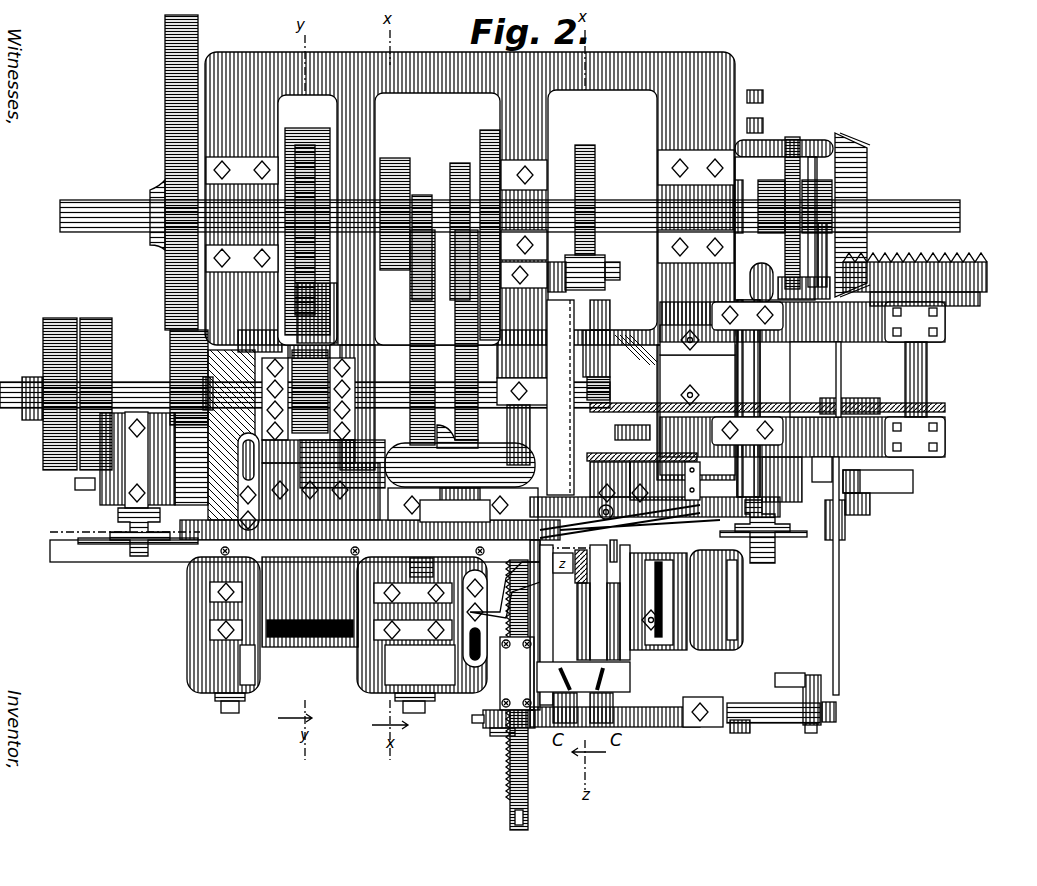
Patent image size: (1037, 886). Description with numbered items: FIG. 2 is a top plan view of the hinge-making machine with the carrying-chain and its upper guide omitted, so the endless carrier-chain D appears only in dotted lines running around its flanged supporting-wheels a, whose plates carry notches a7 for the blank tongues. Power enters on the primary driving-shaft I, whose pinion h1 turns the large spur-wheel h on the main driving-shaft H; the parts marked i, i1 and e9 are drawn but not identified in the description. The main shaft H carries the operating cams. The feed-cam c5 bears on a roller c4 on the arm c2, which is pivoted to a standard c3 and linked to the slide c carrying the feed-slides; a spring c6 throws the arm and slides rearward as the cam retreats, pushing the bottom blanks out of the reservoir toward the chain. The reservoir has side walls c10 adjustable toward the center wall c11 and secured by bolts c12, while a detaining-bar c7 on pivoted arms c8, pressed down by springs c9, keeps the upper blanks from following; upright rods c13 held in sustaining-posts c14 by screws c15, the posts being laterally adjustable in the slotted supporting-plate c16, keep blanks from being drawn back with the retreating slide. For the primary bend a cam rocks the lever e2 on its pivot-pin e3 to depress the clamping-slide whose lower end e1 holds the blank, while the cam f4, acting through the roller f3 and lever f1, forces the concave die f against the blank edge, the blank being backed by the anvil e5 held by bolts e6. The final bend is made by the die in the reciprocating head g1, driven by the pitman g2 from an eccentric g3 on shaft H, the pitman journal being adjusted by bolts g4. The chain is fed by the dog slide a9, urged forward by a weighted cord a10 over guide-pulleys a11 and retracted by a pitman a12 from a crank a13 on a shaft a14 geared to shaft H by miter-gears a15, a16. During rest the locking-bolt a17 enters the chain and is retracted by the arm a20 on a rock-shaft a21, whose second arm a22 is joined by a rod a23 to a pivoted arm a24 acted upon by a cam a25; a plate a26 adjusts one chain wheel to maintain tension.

The large spur-wheel h is at (165, 142).
The main driving-shaft H is at (58, 215).
The eccentric g3 is at (331, 160).
The pitman g2 is at (325, 300).
The bolts g4 is at (310, 428).
The horizontal reciprocating head g1 is at (321, 491).
The cam f4 is at (396, 158).
The anti-friction roller f3 is at (422, 196).
The lever f1 is at (436, 280).
The concave die f is at (460, 231).
The lower end of clamping-slide e1 is at (497, 272).
The lever e2 is at (457, 339).
The journal or pivot-pin e3 is at (417, 464).
The anvil e5 is at (187, 585).
The bolts e6 is at (390, 636).
The block e9 is at (455, 511).
The slide c is at (615, 700).
The arm c2 is at (548, 273).
The standard c3 is at (557, 457).
The roller c4 is at (608, 258).
The feed-cam c5 is at (596, 160).
The spring c6 is at (600, 315).
The detaining-bar c7 is at (632, 592).
The pivoted arms c8 is at (662, 588).
The springs c9 is at (700, 626).
The side walls c10 is at (622, 555).
The center wall c11 is at (610, 592).
The bolts c12 is at (552, 615).
The upright rods c13 is at (675, 560).
The sustaining-posts c14 is at (654, 697).
The screws c15 is at (594, 665).
The slotted supporting-plate c16 is at (644, 678).
The endless carrier-chain D is at (589, 566).
The primary driving-shaft I is at (305, 397).
The pulley i is at (51, 394).
The pulley i1 is at (104, 394).
The pinion h1 is at (168, 380).
The supporting-wheels a is at (103, 545).
The notches a7 is at (512, 790).
The slide a9 is at (665, 481).
The weighted cord a10 is at (642, 448).
The guide-pulleys a11 is at (862, 402).
The pitman a12 is at (822, 505).
The crank a13 is at (885, 490).
The horizontal shaft a14 is at (930, 387).
The miter-gear a15 is at (975, 272).
The miter-gear a16 is at (866, 215).
The locking-bolt a17 is at (530, 788).
The arm a20 is at (490, 728).
The rock-shaft a21 is at (765, 723).
The second arm a22 is at (808, 675).
The rod a23 is at (840, 378).
The pivoted arm a24 is at (817, 222).
The cam a25 is at (796, 140).
The plate a26 is at (62, 490).